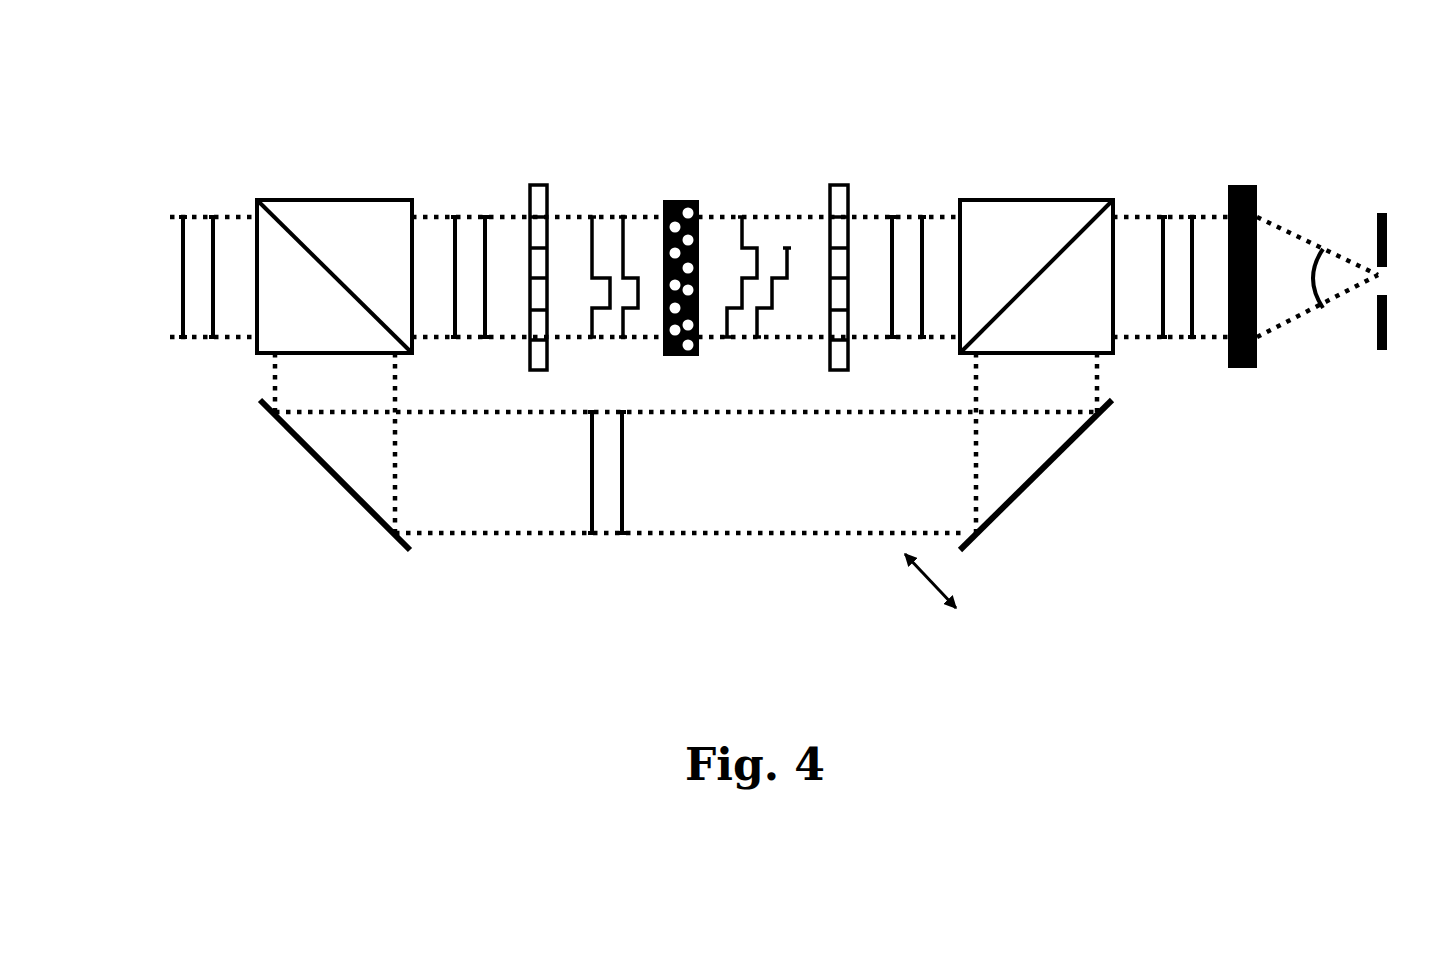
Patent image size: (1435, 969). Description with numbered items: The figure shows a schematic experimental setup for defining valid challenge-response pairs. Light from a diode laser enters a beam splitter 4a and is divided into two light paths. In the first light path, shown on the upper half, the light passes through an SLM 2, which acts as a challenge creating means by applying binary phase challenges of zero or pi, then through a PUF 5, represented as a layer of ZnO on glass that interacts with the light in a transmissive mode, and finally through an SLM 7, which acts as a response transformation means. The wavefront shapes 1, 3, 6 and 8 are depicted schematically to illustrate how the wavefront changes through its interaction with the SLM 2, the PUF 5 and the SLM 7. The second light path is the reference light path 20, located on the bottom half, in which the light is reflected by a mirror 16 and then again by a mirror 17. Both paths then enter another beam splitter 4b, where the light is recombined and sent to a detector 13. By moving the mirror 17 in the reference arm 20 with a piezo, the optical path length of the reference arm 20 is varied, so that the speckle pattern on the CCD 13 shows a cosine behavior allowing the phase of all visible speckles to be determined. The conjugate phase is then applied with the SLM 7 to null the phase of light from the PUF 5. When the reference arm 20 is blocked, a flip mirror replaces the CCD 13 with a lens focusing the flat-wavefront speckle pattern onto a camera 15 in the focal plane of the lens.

The wavefront shape 1 is at (210, 273).
The SLM 2 is at (543, 183).
The wavefront shape 3 is at (615, 248).
The beam splitter 4a is at (313, 202).
The beam splitter 4b is at (1043, 200).
The PUF 5 is at (676, 200).
The wavefront shape 6 is at (773, 266).
The SLM 7 is at (843, 186).
The wavefront shape 8 is at (922, 270).
The detector 13 is at (1255, 193).
The camera 15 is at (1383, 213).
The mirror 16 is at (345, 487).
The mirror 17 is at (1073, 443).
The reference light path 20 is at (483, 475).